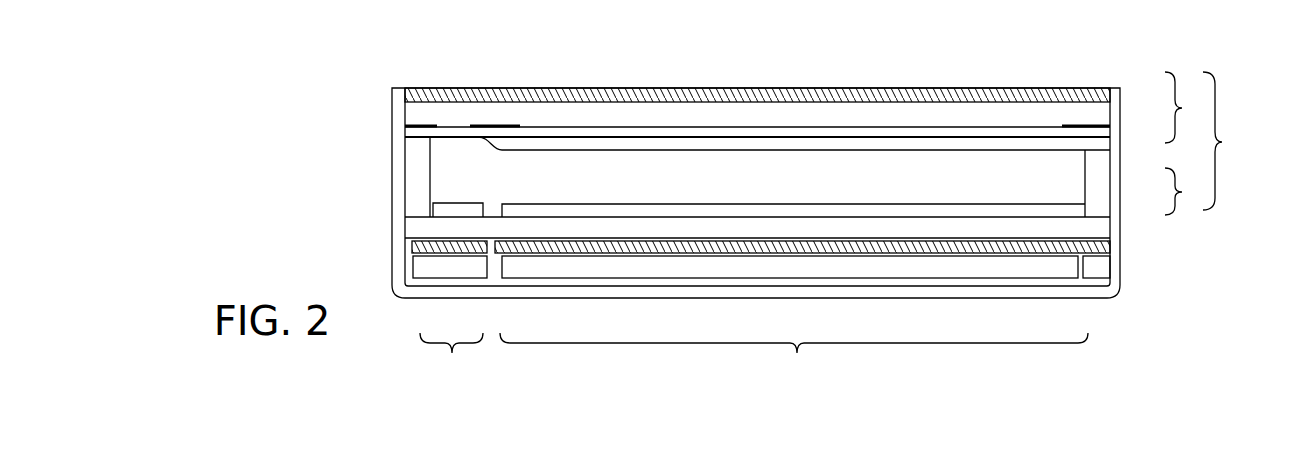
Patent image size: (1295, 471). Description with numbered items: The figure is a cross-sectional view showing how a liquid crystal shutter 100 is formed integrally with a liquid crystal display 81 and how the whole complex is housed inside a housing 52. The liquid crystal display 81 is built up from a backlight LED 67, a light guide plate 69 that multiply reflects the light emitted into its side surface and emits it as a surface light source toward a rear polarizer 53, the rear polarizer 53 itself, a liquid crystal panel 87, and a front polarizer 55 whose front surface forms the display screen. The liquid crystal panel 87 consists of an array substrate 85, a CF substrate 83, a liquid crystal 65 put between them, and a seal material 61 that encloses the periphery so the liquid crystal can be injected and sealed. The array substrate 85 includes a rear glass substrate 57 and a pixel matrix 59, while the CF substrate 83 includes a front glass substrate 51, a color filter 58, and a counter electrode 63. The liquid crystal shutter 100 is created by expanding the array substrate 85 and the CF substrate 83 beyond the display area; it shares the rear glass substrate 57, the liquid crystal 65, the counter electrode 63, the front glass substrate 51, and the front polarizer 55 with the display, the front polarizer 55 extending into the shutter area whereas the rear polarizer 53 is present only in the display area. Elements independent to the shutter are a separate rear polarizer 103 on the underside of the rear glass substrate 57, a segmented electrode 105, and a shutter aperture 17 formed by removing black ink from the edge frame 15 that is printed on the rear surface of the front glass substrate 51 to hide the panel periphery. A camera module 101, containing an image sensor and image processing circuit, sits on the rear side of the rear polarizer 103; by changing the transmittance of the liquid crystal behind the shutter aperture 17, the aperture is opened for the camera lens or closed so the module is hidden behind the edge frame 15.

The edge frame 15 is at (412, 125).
The shutter aperture 17 is at (456, 116).
The front glass substrate 51 is at (1113, 90).
The housing 52 is at (1122, 284).
The rear polarizer 53 is at (1107, 246).
The front polarizer 55 is at (985, 96).
The rear glass substrate 57 is at (1097, 227).
The color filter 58 is at (1097, 115).
The pixel matrix 59 is at (1080, 209).
The seal material 61 is at (415, 158).
The counter electrode 63 is at (1097, 146).
The liquid crystal 65 is at (750, 185).
The backlight LED 67 is at (1097, 268).
The light guide plate 69 is at (948, 270).
The liquid crystal display 81 is at (794, 362).
The CF substrate 83 is at (1187, 107).
The array substrate 85 is at (1187, 191).
The liquid crystal panel 87 is at (1232, 141).
The liquid crystal shutter 100 is at (451, 362).
The camera module 101 is at (417, 272).
The rear polarizer 103 is at (412, 247).
The segmented electrode 105 is at (473, 208).